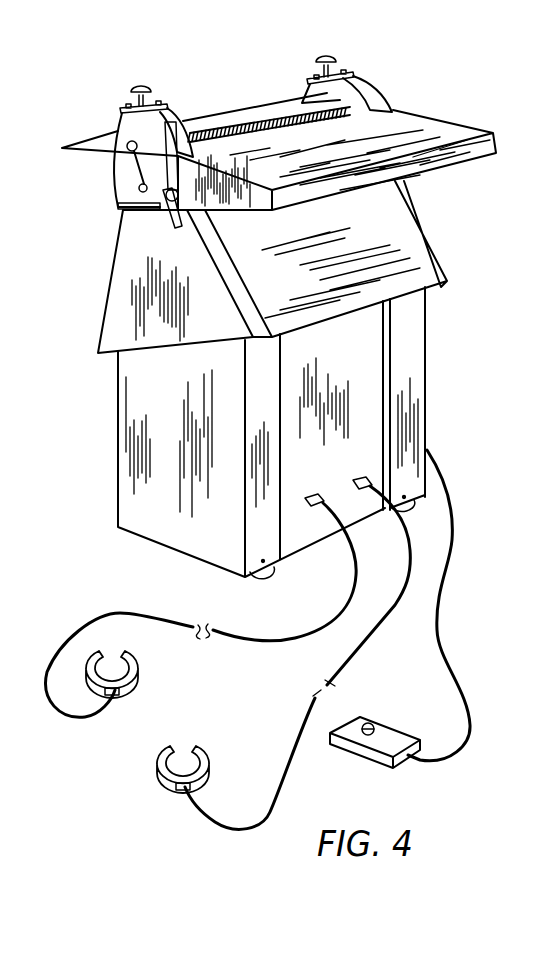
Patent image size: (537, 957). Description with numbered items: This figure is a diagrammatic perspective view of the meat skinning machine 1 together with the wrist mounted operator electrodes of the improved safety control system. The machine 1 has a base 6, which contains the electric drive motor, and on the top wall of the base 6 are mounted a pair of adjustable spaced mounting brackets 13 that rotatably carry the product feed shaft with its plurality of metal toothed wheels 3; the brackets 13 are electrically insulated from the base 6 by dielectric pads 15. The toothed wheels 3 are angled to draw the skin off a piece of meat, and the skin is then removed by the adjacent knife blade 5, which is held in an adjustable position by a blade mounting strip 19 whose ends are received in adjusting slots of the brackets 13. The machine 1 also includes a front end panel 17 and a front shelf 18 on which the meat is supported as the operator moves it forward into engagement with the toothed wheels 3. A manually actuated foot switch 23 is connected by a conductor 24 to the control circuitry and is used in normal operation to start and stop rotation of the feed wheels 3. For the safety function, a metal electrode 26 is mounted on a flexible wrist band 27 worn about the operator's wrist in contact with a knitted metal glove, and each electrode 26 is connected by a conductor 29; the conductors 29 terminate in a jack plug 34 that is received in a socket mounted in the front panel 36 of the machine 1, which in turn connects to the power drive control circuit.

The meat skinning machine 1 is at (412, 96).
The metal toothed wheels 3 is at (250, 133).
The knife blade 5 is at (282, 113).
The base 6 is at (178, 533).
The mounting brackets 13 is at (127, 130).
The dielectric pads 15 is at (127, 207).
The front end panel 17 is at (302, 302).
The front shelf 18 is at (423, 142).
The blade mounting strip 19 is at (198, 118).
The foot switch 23 is at (382, 742).
The conductor 24 is at (452, 648).
The metal electrode 26 is at (117, 697).
The flexible wrist band 27 is at (130, 685).
The conductor 29 is at (120, 613).
The jack plug 34 is at (355, 480).
The front panel 36 is at (357, 362).